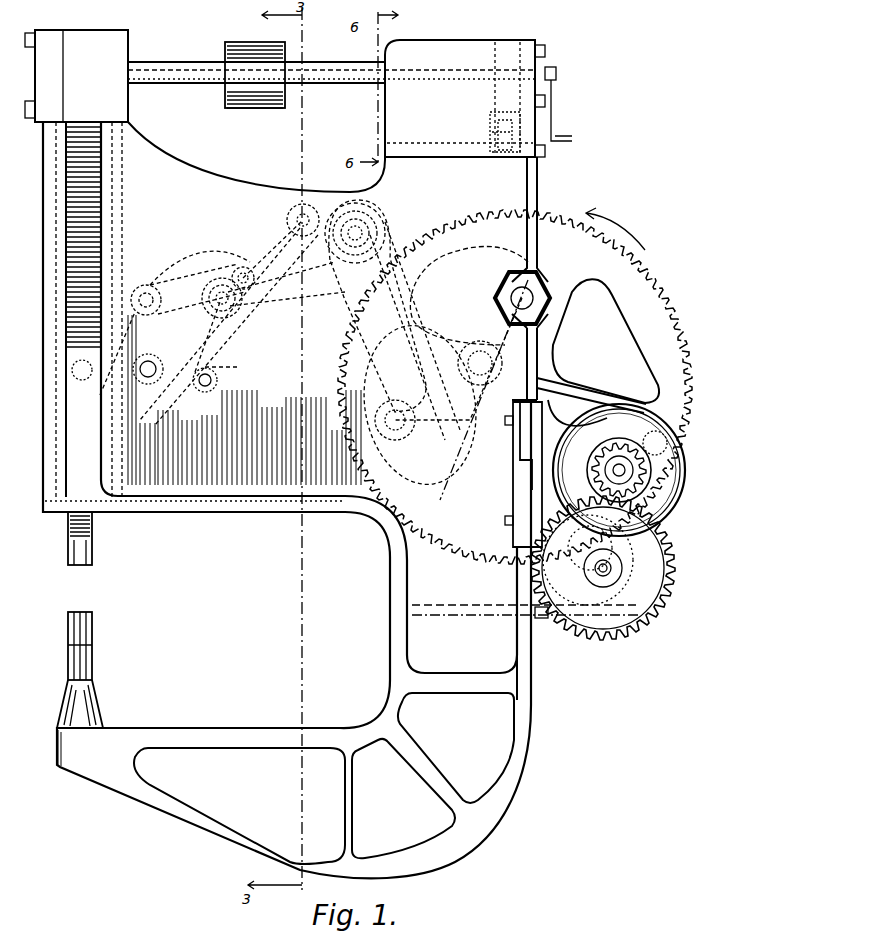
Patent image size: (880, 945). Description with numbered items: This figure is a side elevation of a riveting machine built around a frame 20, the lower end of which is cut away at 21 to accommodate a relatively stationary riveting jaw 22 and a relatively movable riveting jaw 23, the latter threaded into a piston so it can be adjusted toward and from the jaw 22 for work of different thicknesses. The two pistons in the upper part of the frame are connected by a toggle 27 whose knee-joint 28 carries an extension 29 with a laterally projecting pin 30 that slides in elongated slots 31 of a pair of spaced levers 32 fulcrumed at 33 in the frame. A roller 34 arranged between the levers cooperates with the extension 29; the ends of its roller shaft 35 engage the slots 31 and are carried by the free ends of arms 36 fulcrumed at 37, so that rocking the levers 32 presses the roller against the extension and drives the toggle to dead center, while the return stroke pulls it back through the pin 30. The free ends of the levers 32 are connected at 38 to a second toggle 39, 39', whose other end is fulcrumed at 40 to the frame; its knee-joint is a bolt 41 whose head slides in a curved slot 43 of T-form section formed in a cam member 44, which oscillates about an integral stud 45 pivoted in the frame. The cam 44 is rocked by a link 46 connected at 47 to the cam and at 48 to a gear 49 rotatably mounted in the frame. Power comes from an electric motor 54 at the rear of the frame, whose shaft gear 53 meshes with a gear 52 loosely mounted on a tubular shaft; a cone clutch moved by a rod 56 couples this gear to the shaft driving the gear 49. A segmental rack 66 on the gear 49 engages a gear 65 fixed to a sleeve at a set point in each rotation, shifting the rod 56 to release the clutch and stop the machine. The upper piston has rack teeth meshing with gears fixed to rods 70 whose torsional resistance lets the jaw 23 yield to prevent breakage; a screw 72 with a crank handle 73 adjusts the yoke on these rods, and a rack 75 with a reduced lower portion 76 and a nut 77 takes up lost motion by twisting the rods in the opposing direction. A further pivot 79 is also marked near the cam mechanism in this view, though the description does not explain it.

The frame 20 is at (537, 182).
The cut-away portion 21 is at (341, 500).
The stationary riveting jaw 22 is at (92, 626).
The movable riveting jaw 23 is at (92, 556).
The toggle 27 is at (160, 264).
The knee-joint 28 is at (197, 286).
The extension 29 is at (228, 258).
The pin 30 is at (252, 276).
The elongated slots 31 is at (229, 326).
The levers 32 is at (262, 240).
The fulcrum 33 is at (148, 377).
The roller 34 is at (287, 314).
The roller shaft 35 is at (238, 298).
The arms 36 is at (240, 367).
The fulcrum 37 is at (211, 380).
The connection 38 is at (298, 215).
The toggle 39 is at (281, 292).
The toggle 39' is at (461, 373).
The fulcrum 40 is at (526, 294).
The bolt 41 is at (427, 405).
The curved slot 43 is at (398, 232).
The cam member 44 is at (403, 215).
The stud 45 is at (395, 200).
The link 46 is at (577, 400).
The connection 47 is at (548, 322).
The connection 48 is at (688, 445).
The gear 49 is at (677, 345).
The gear 52 is at (648, 618).
The gear 53 is at (650, 480).
The electric motor 54 is at (688, 468).
The rod 56 is at (612, 568).
The gear 65 is at (672, 562).
The segmental rack 66 is at (665, 538).
The rods 70 is at (280, 76).
The screw 72 is at (556, 73).
The crank handle 73 is at (553, 112).
The rack 75 is at (492, 121).
The reduced lower portion 76 is at (497, 160).
The nut 77 is at (490, 140).
The pivot 79 is at (355, 233).